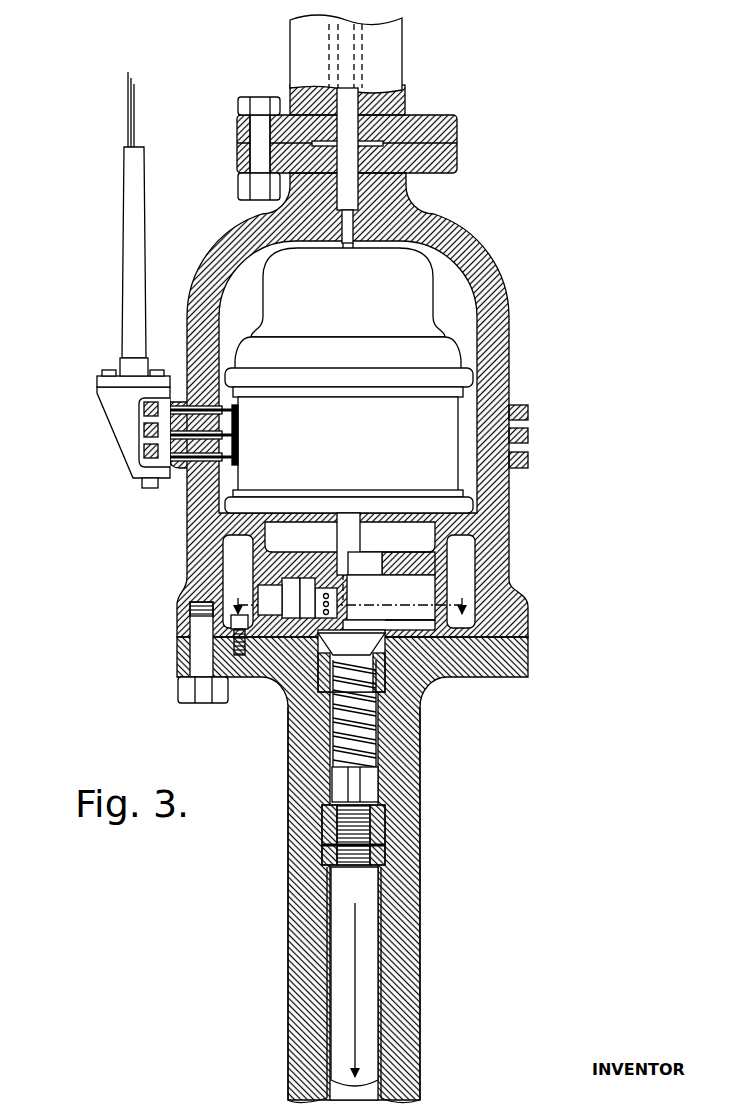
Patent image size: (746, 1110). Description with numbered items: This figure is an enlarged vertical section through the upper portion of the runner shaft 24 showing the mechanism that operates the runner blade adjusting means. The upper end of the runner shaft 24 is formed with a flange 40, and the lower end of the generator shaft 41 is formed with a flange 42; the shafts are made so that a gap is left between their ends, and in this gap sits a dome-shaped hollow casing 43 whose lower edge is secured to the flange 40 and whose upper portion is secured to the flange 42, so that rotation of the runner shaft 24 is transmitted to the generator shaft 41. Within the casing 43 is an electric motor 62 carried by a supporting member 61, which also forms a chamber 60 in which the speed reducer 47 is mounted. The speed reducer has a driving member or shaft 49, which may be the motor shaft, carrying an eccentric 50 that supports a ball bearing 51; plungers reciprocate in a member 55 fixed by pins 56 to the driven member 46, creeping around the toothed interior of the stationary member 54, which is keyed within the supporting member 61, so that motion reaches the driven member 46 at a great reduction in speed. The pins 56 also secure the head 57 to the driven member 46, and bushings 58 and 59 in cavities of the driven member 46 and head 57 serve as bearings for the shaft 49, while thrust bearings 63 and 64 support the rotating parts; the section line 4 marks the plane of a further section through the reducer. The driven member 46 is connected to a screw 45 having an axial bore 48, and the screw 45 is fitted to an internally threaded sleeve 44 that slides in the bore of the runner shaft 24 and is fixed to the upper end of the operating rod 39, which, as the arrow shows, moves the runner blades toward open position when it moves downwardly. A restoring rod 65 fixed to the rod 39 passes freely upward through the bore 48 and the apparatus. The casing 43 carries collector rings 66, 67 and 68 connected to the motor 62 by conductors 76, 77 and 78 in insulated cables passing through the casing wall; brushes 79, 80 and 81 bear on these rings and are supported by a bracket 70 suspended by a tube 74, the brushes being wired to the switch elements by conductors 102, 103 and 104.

The section line 4- 4 is at (350, 602).
The runner shaft 24 is at (412, 908).
The operating rod 39 is at (372, 996).
The flange 40 is at (515, 658).
The generator shaft 41 is at (390, 50).
The flange 42 is at (457, 128).
The dome-shaped hollow casing 43 is at (500, 334).
The internally threaded sleeve 44 is at (380, 780).
The screw 45 is at (370, 718).
The driven member 46 is at (337, 672).
The speed reducer 47 is at (420, 643).
The bore 48 is at (370, 737).
The driving member or shaft 49 is at (355, 537).
The eccentric 50 is at (347, 600).
The ball bearing 51 is at (338, 620).
The stationary member 54 is at (268, 592).
The member 55 is at (258, 586).
The pins 56 is at (272, 630).
The head 57 is at (303, 585).
The bushing 58 is at (300, 630).
The bushing 59 is at (335, 555).
The chamber 60 is at (423, 583).
The supporting member 61 is at (440, 549).
The electric motor 62 is at (349, 380).
The thrust bearing 63 is at (396, 558).
The thrust bearing 64 is at (402, 640).
The restoring rod 65 is at (347, 183).
The collector ring 66 is at (524, 412).
The collector ring 67 is at (524, 435).
The collector ring 68 is at (524, 458).
The bracket 70 is at (117, 413).
The tube or pipe 74 is at (130, 210).
The conductor 76 is at (240, 421).
The conductor 77 is at (240, 445).
The conductor 78 is at (227, 463).
The brush 79 is at (150, 414).
The brush 80 is at (152, 437).
The brush 81 is at (165, 462).
The conductor 102 is at (128, 76).
The conductor 103 is at (131, 92).
The conductor 104 is at (134, 112).